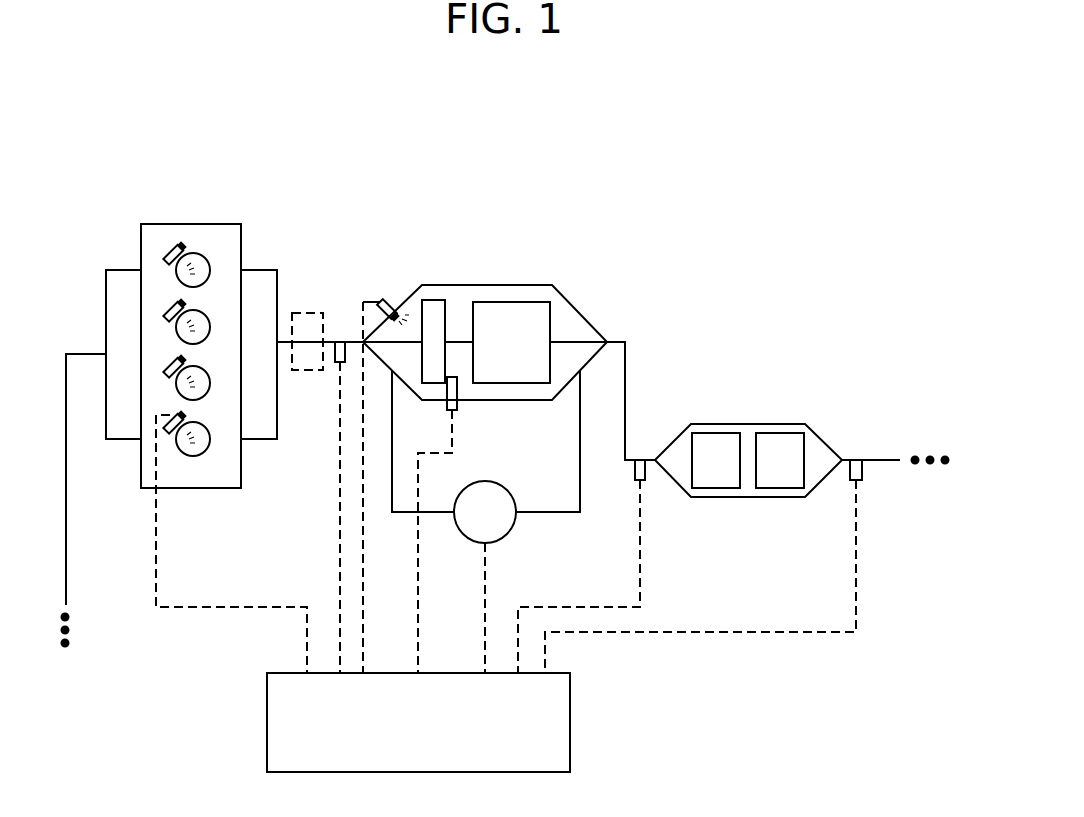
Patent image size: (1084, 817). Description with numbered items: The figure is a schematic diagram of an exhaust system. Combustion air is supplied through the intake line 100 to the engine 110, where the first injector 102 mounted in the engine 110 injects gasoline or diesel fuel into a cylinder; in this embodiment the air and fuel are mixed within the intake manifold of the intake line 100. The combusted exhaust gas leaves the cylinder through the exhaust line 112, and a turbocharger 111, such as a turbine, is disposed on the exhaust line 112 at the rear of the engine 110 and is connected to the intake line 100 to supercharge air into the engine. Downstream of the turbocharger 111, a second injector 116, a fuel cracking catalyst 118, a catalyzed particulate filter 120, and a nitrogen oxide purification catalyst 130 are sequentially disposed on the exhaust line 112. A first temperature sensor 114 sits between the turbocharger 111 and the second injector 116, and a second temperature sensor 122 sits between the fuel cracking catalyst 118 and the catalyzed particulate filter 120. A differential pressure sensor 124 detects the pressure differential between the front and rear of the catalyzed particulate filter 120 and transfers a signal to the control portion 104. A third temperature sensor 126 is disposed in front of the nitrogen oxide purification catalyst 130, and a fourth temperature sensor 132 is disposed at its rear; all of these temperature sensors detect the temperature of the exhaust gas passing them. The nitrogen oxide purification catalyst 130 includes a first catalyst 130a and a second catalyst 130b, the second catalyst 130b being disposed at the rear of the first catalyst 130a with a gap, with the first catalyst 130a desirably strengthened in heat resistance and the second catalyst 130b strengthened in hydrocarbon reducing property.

The intake line 100 is at (66, 572).
The first injector 102 is at (168, 247).
The control portion 104 is at (570, 720).
The engine 110 is at (228, 224).
The turbocharger 111 is at (296, 313).
The exhaust line 112 is at (352, 341).
The first temperature sensor 114 is at (342, 341).
The second injector 116 is at (388, 300).
The fuel cracking catalyst 118 is at (434, 300).
The catalyzed particulate filter 120 is at (526, 302).
The second temperature sensor 122 is at (458, 401).
The differential pressure sensor 124 is at (510, 531).
The third temperature sensor 126 is at (643, 461).
The nitrogen oxide purification catalyst 130 is at (813, 381).
The first catalyst 130a is at (717, 433).
The second catalyst 130b is at (782, 433).
The fourth temperature sensor 132 is at (858, 460).